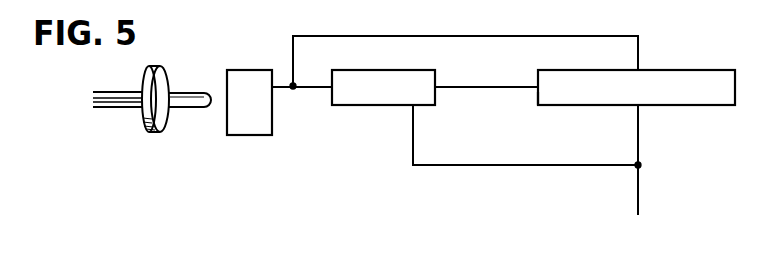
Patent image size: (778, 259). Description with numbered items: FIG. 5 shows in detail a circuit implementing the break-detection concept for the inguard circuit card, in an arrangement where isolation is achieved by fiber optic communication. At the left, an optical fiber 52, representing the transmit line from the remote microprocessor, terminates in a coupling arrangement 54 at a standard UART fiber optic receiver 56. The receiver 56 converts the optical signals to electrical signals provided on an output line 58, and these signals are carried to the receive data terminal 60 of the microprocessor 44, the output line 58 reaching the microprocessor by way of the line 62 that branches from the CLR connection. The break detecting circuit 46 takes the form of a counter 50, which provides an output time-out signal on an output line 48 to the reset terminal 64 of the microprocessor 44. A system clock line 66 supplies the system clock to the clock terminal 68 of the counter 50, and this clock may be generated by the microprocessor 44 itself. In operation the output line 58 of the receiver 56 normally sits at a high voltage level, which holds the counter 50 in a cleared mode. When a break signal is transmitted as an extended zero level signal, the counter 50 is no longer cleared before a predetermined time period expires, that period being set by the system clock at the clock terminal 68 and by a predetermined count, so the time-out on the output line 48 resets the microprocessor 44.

The microprocessor 44 is at (708, 68).
The break detecting circuit 46 is at (504, 120).
The output line 48 is at (453, 85).
The counter 50 is at (347, 105).
The optical fiber 52 is at (105, 107).
The coupling arrangement 54 is at (182, 107).
The UART fiber optic receiver 56 is at (247, 135).
The output line 58 is at (282, 90).
The receive data terminal 60 is at (637, 63).
The sensor output line 62 is at (332, 83).
The reset terminal 64 is at (538, 98).
The system clock line 66 is at (637, 183).
The clock terminal 68 is at (413, 105).